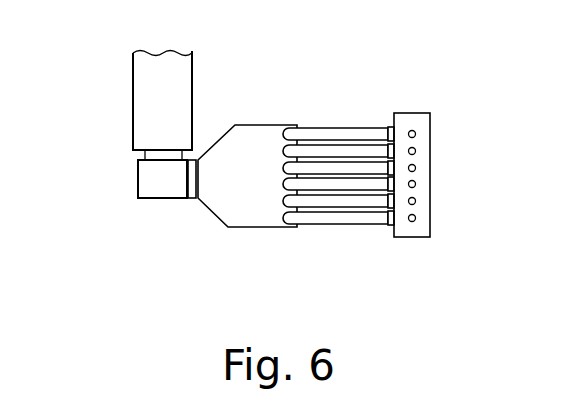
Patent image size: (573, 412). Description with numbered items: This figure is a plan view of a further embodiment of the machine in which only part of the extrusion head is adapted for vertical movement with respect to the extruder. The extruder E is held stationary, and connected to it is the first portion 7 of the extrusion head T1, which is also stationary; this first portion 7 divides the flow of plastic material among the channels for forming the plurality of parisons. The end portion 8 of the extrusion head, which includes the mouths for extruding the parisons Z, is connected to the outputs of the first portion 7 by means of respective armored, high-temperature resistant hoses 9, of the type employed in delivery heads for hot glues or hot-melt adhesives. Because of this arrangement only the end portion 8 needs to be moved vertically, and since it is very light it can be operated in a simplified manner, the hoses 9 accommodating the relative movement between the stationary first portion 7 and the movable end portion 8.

The extruder E is at (135, 90).
The extrusion head T1 is at (213, 205).
The first portion of the extrusion head 7 is at (248, 222).
The armored high-temperature resistant hoses 9 is at (333, 124).
The end portion of the extrusion head 8 is at (436, 202).
The parisons Z is at (414, 184).